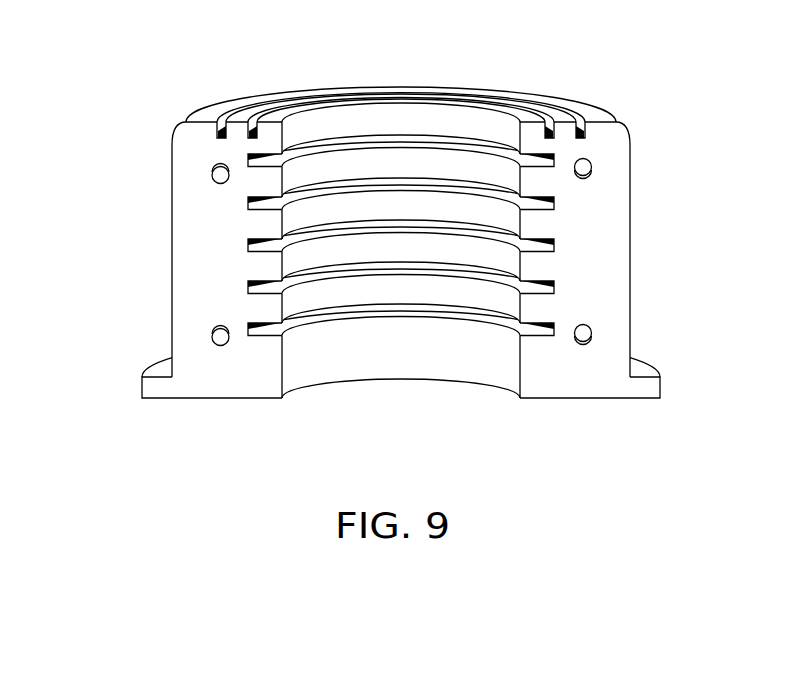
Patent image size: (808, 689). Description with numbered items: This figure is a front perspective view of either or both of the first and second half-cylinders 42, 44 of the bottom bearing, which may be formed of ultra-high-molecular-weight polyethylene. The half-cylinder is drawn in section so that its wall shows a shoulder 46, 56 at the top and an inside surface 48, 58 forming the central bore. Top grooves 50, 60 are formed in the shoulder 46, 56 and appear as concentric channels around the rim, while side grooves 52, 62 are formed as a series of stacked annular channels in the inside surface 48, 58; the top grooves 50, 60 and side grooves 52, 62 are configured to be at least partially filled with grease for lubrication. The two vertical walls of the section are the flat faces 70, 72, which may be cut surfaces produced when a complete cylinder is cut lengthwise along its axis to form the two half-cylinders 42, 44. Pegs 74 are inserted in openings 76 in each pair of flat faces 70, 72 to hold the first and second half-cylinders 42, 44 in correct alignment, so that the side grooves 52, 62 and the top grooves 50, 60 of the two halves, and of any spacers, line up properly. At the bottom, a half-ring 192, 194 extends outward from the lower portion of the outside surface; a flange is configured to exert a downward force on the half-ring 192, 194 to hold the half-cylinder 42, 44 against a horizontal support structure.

The first half-cylinder 42 is at (463, 232).
The second half-cylinder 44 is at (639, 161).
The shoulder 46 is at (447, 97).
The shoulder 56 is at (588, 113).
The inside surface 48 is at (401, 268).
The inside surface 58 is at (309, 363).
The top grooves 50 is at (365, 96).
The top grooves 60 is at (283, 113).
The side grooves 52 is at (401, 296).
The side grooves 62 is at (472, 275).
The flat surfaces 70 is at (400, 260).
The flat surfaces 72 is at (187, 256).
The pegs 74 is at (218, 183).
The openings 76 is at (588, 177).
The first half-ring 192 is at (401, 406).
The second half-ring 194 is at (152, 387).